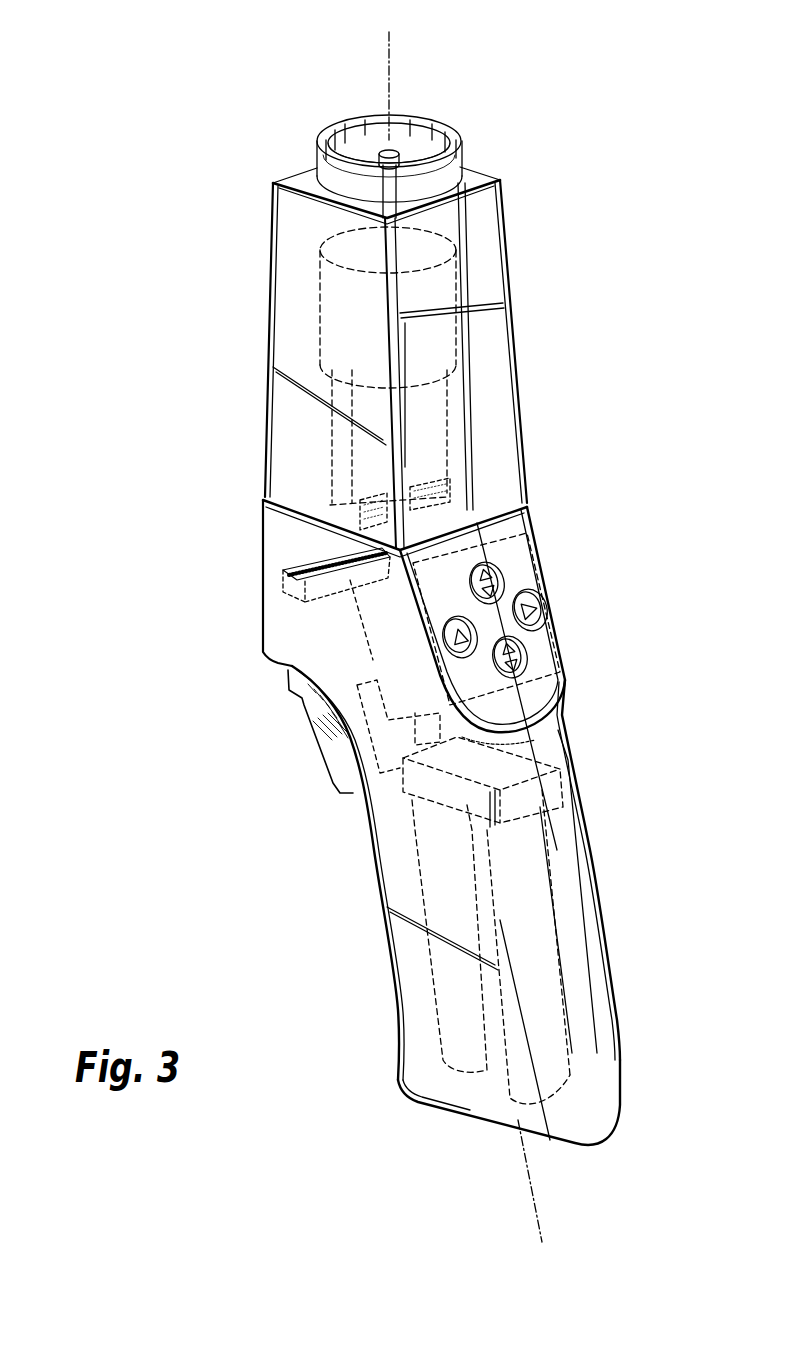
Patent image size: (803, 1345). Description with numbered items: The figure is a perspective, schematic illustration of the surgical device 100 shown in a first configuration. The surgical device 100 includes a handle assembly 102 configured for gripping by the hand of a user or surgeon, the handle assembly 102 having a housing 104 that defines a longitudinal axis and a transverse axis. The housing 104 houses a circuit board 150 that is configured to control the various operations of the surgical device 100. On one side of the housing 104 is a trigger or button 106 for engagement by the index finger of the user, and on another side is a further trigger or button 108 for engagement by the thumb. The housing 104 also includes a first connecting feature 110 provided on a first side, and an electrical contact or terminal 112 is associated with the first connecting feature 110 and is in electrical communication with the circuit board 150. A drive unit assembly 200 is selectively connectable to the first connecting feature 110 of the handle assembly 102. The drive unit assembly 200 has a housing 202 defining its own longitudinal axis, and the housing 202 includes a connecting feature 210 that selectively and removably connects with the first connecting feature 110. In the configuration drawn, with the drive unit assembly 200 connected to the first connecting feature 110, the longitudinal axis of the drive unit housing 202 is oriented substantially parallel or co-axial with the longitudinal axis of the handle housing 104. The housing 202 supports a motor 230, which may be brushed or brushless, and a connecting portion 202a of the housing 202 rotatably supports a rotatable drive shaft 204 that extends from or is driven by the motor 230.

The surgical device 100 is at (162, 165).
The handle assembly 102 is at (620, 703).
The housing 104 is at (570, 737).
The trigger or button 106 is at (337, 772).
The trigger or button 108 is at (513, 570).
The first connecting feature 110 is at (317, 530).
The electrical contact or terminal 112 is at (285, 607).
The circuit board 150 is at (380, 647).
The drive unit assembly 200 is at (530, 265).
The housing 202 is at (513, 361).
The connecting portion 202a is at (311, 148).
The rotatable drive shaft 204 is at (397, 153).
The connecting feature 210 is at (323, 483).
The motor 230 is at (320, 315).